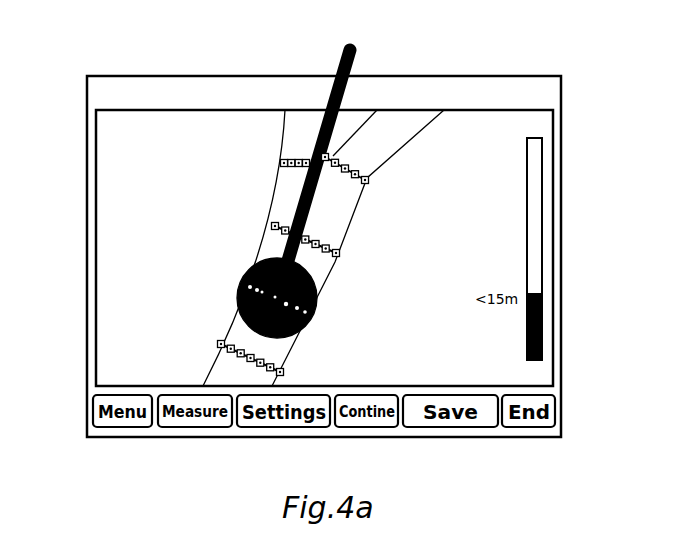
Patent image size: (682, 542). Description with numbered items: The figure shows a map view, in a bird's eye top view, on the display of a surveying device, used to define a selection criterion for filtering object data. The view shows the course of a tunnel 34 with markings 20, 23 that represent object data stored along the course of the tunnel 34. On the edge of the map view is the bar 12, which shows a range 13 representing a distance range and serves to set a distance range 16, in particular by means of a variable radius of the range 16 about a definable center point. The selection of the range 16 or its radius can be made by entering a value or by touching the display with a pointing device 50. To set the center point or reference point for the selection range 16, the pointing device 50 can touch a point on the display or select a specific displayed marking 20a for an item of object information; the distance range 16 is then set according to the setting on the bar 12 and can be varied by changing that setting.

The bar 12 is at (532, 184).
The range 13 is at (538, 317).
The distance range 16 is at (243, 266).
The markings 20 is at (367, 178).
The specific displayed marking 20a is at (286, 344).
The markings 23 is at (318, 300).
The tunnel 34 is at (274, 172).
The pointing device 50 is at (355, 48).